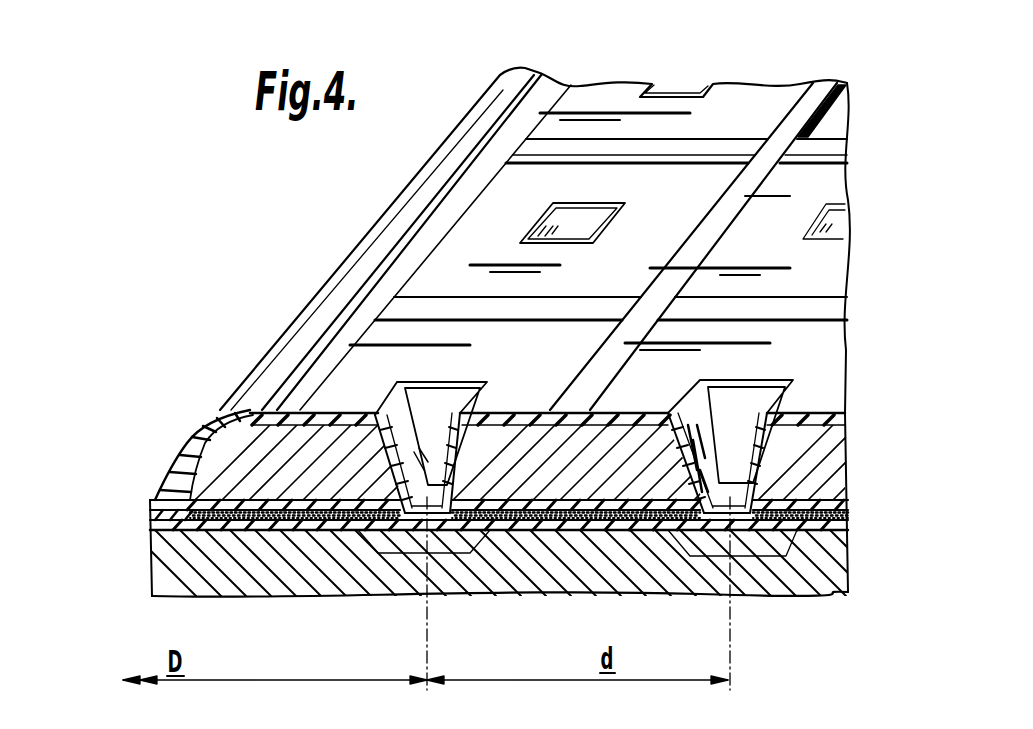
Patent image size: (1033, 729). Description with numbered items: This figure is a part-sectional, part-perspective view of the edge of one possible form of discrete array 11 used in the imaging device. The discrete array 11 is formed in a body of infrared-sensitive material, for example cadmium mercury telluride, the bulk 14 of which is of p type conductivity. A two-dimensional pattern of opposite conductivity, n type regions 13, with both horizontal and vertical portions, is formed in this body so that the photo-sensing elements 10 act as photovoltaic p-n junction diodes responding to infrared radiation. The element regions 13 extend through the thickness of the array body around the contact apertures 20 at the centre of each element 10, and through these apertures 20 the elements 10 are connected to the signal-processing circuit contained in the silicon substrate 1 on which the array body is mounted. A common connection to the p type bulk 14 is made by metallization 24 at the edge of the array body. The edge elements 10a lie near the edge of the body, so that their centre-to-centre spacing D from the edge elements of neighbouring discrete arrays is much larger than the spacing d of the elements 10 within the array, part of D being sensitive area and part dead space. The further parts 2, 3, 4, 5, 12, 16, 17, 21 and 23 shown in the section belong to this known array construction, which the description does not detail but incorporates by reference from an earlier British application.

The substrate 1 is at (501, 584).
The doped region 2 is at (582, 582).
The contact region 3 is at (621, 574).
The insulating layer 4 is at (486, 494).
The insulating layer 5 is at (485, 544).
The photo-sensing element 10 is at (547, 304).
The edge element 10a is at (552, 241).
The discrete array 11 is at (500, 332).
The insulating layer 12 is at (499, 525).
The n type region 13 is at (552, 328).
The p type bulk 14 is at (547, 432).
The gap 16 is at (435, 247).
The layer 17 is at (499, 567).
The contact aperture 20 is at (597, 328).
The intermediate layer 21 is at (501, 572).
The liner 23 is at (575, 328).
The metallization 24 is at (200, 454).